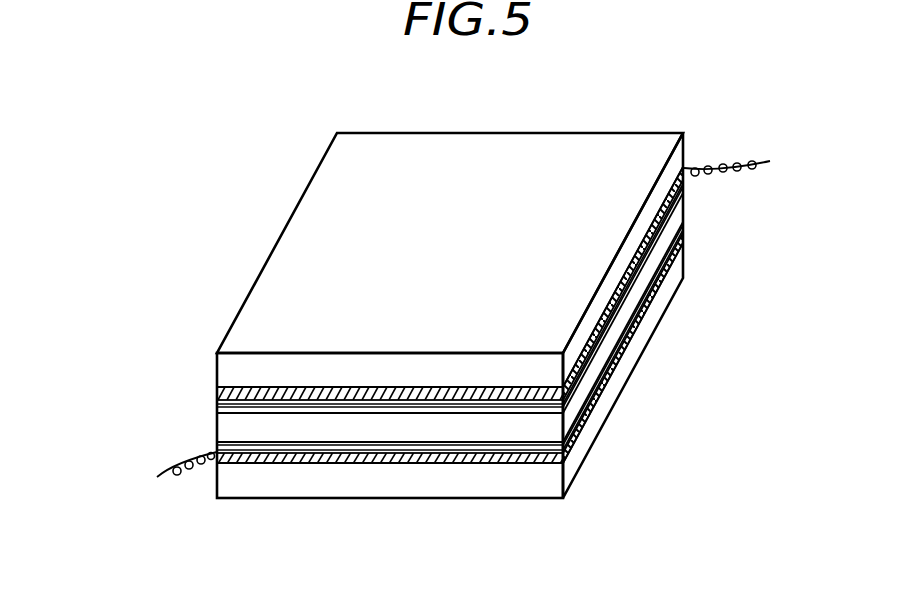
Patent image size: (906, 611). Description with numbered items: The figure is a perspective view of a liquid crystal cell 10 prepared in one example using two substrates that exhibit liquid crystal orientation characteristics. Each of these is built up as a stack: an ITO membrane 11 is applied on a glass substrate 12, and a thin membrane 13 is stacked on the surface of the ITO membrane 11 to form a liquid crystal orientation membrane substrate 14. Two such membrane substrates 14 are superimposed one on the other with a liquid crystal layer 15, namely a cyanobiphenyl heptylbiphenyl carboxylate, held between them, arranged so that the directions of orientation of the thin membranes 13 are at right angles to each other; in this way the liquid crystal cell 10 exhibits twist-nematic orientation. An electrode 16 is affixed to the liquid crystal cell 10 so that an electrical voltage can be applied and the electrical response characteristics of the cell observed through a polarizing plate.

The liquid crystal cell 10 is at (340, 112).
The ITO membrane 11 is at (218, 403).
The glass substrate 12 is at (218, 372).
The thin membrane 13 is at (217, 428).
The liquid crystal orientation membrane substrate 14 is at (208, 391).
The liquid crystal layer 15 is at (285, 432).
The electrode 16 is at (175, 478).